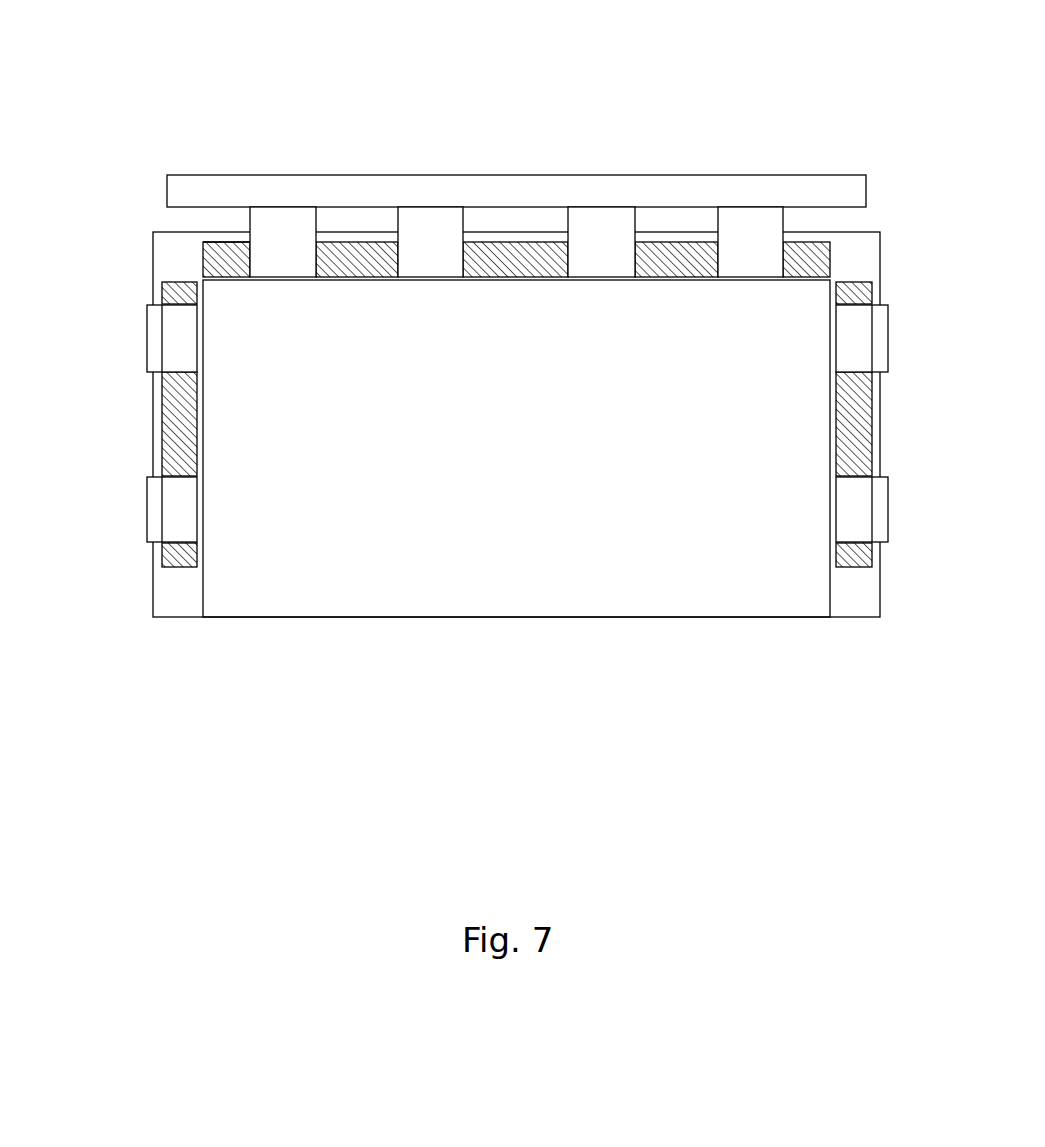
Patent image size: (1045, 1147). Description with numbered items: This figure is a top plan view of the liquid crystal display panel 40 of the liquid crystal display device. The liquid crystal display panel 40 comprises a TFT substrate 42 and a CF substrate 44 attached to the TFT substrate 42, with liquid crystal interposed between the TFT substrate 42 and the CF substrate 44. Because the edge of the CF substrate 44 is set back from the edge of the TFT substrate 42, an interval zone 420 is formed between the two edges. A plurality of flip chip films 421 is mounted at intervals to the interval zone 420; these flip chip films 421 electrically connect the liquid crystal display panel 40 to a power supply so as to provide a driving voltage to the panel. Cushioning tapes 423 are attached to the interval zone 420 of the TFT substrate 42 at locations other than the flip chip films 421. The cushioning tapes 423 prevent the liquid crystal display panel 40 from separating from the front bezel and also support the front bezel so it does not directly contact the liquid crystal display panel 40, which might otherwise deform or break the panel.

The liquid crystal display panel 40 is at (135, 228).
The TFT substrate 42 is at (167, 617).
The CF substrate 44 is at (532, 520).
The interval zone 420 is at (856, 255).
The flip chip films 421 is at (748, 240).
The cushioning tapes 423 is at (499, 253).